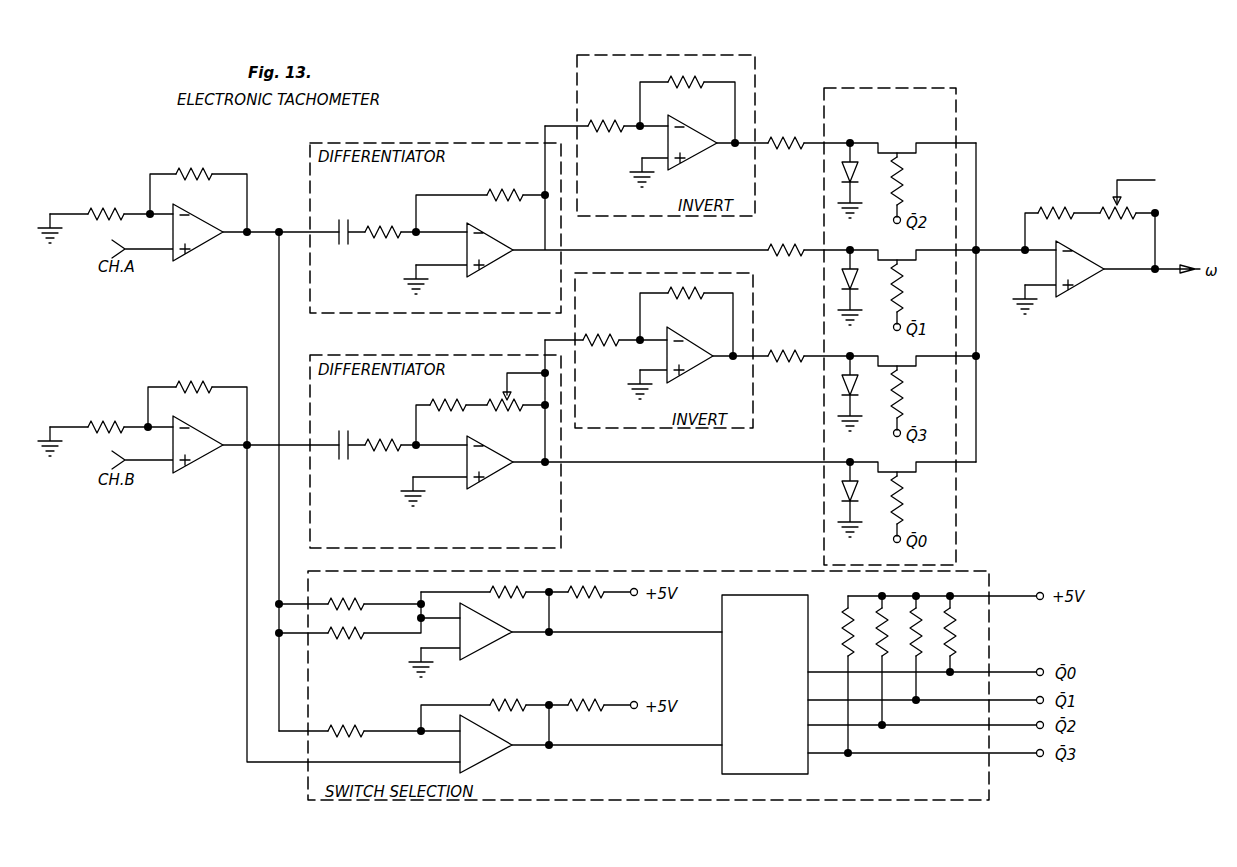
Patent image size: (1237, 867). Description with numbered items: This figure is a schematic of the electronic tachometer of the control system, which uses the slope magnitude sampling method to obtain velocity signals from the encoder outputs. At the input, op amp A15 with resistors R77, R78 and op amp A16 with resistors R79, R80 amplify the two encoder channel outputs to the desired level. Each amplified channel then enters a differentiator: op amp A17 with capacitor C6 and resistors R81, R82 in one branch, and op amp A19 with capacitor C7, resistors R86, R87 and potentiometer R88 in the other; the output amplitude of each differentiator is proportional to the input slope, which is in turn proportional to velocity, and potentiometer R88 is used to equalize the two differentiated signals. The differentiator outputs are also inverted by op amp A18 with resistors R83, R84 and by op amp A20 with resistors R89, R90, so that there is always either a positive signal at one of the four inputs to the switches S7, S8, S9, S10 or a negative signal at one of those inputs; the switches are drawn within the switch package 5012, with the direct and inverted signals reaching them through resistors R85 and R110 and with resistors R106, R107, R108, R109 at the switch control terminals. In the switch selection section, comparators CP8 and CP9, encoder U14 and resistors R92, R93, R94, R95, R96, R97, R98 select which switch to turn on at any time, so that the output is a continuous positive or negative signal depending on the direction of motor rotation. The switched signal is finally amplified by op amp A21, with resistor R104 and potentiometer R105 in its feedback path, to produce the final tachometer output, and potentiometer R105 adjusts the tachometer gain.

The resistor R77 is at (105, 217).
The resistor R78 is at (198, 192).
The op amp A15 is at (168, 234).
The resistor R79 is at (105, 430).
The resistor R80 is at (197, 405).
The op amp A16 is at (168, 446).
The capacitor C6 is at (348, 222).
The resistor R81 is at (414, 243).
The resistor R82 is at (480, 212).
The op amp A17 is at (465, 258).
The resistor R83 is at (606, 118).
The resistor R84 is at (685, 109).
The op amp A18 is at (678, 151).
The resistor R85 is at (808, 135).
The resistor R110 is at (809, 243).
The capacitor C7 is at (347, 436).
The resistor R86 is at (414, 456).
The resistor R87 is at (449, 424).
The potentiometer R88 is at (517, 401).
The op amp A19 is at (461, 471).
The resistor R89 is at (606, 349).
The resistor R90 is at (684, 321).
The op amp A20 is at (677, 363).
The analog switch package 5012 is at (890, 326).
The switch S7 is at (907, 171).
The switch S8 is at (907, 278).
The switch S9 is at (907, 384).
The switch S10 is at (907, 490).
The resistor R106 is at (916, 188).
The resistor R107 is at (916, 295).
The resistor R108 is at (916, 401).
The resistor R109 is at (916, 507).
The resistor R104 is at (1062, 220).
The potentiometer R105 is at (1124, 224).
The op amp A21 is at (1063, 277).
The resistor R92 is at (352, 596).
The resistor R93 is at (369, 626).
The resistor R94 is at (487, 602).
The resistor R95 is at (593, 601).
The resistor R96 is at (369, 722).
The resistor R97 is at (487, 715).
The resistor R98 is at (593, 714).
The comparator CP8 is at (481, 634).
The comparator CP9 is at (506, 743).
The encoder U14 is at (765, 684).